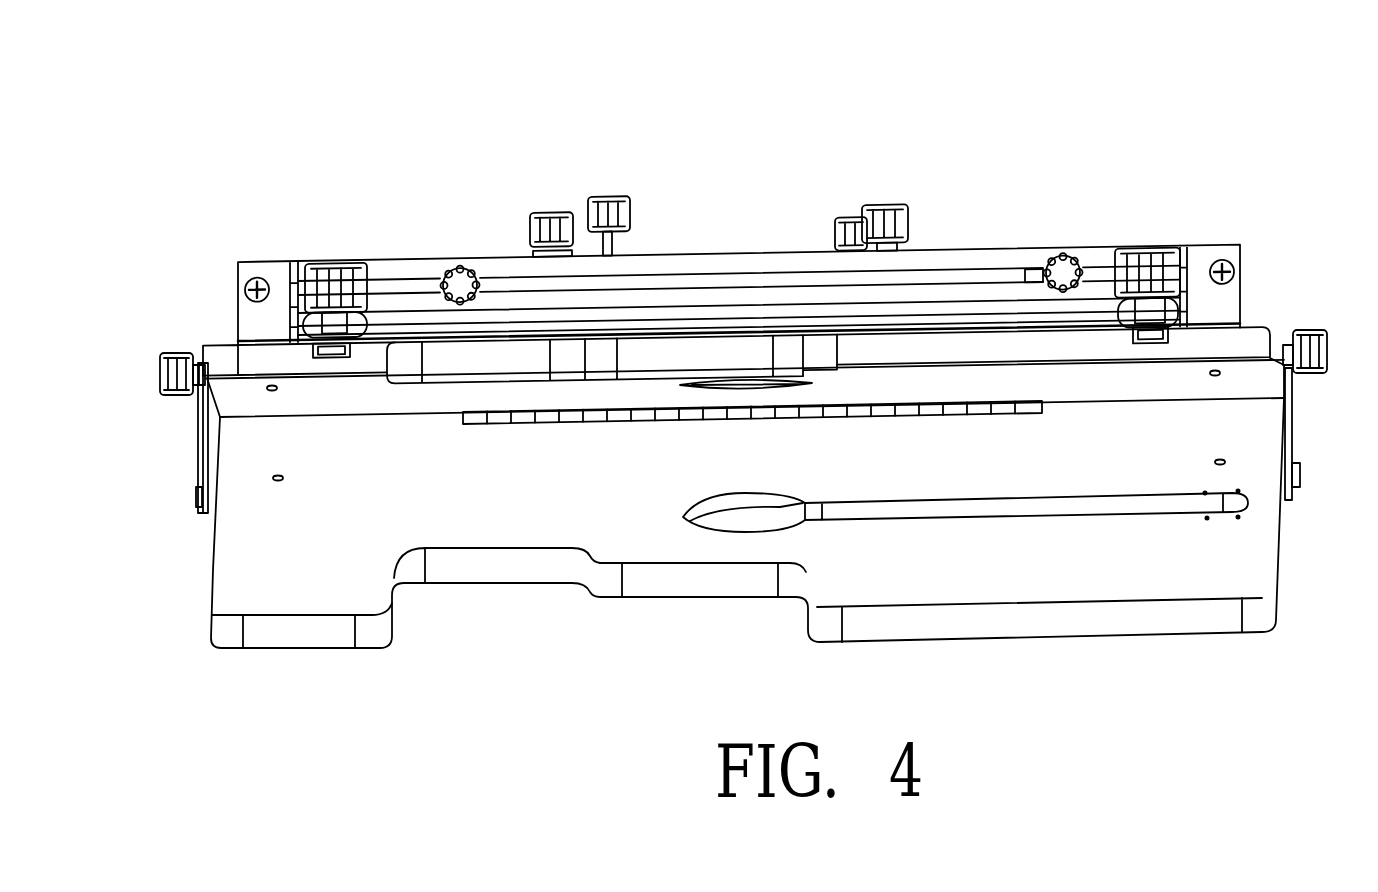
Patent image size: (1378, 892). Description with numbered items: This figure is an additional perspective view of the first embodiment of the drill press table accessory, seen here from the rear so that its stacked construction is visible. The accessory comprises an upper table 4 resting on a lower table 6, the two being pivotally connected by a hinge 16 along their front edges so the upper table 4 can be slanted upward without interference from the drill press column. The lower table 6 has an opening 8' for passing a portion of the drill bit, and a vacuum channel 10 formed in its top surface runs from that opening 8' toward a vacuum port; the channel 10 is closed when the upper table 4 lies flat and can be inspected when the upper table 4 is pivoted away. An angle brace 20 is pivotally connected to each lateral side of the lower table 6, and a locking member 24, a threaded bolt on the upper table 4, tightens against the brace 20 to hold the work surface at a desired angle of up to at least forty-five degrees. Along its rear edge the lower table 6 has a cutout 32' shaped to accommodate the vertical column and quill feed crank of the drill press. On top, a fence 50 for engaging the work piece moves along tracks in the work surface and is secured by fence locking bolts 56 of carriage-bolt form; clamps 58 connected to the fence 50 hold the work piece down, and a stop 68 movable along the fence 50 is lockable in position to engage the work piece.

The upper table 4 is at (222, 344).
The lower table 6 is at (207, 580).
The opening 8' is at (744, 594).
The vacuum channel 10 is at (1108, 522).
The hinge 16 is at (520, 418).
The angle brace 20 is at (200, 447).
The locking member 24 is at (160, 370).
The cutout 32' is at (497, 627).
The fence 50 is at (975, 251).
The fence locking bolt 56 is at (340, 285).
The clamp 58 is at (581, 184).
The stop 68 is at (458, 288).